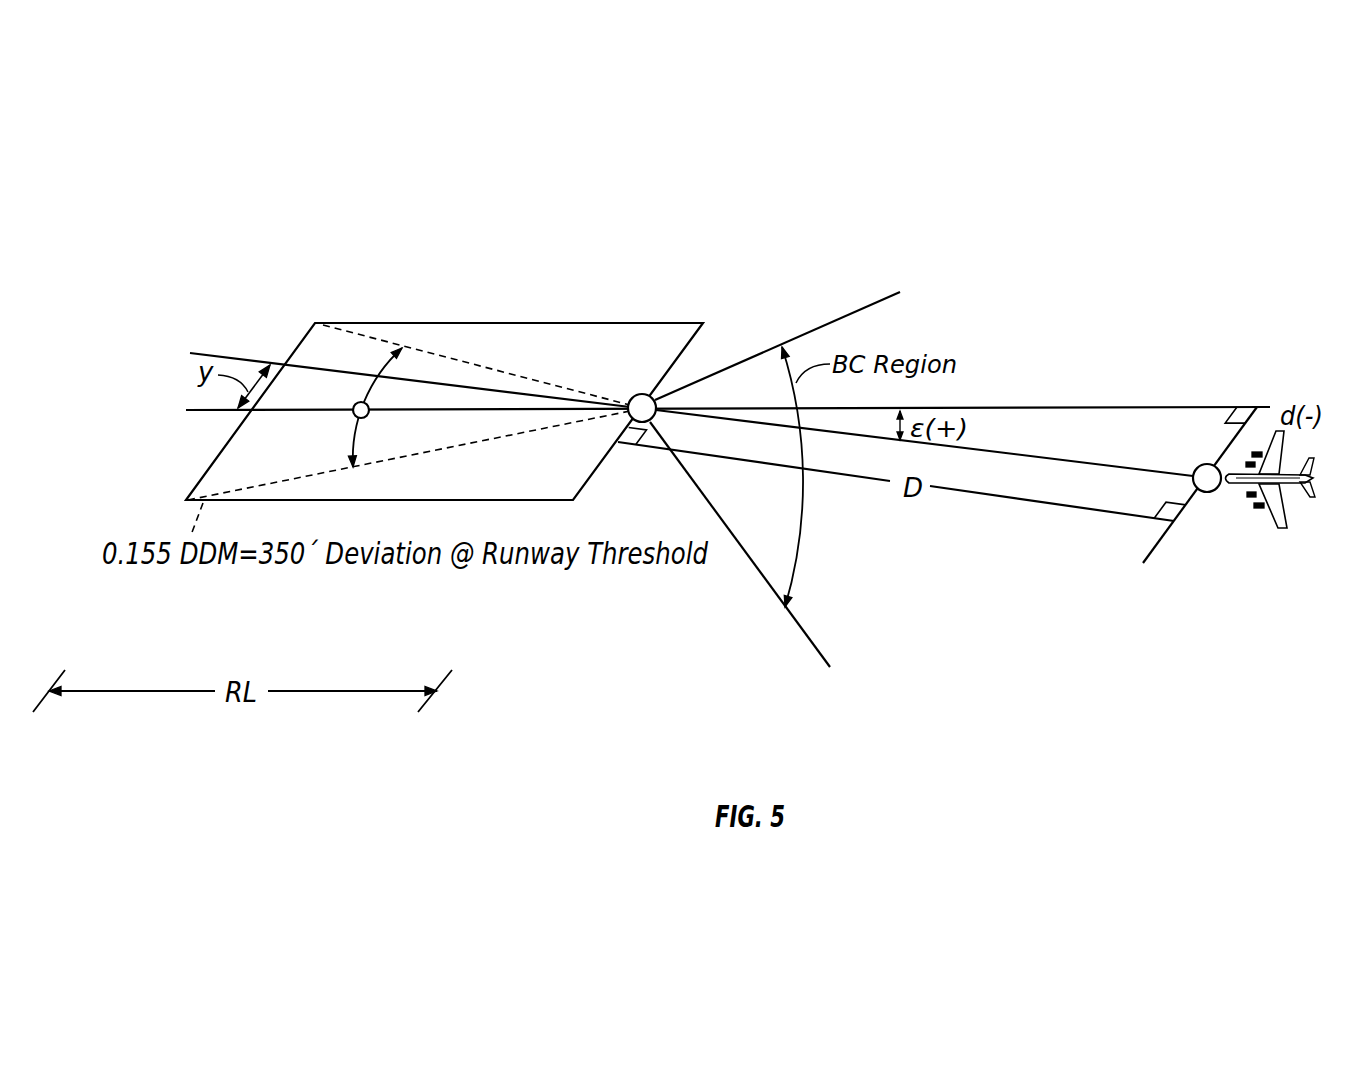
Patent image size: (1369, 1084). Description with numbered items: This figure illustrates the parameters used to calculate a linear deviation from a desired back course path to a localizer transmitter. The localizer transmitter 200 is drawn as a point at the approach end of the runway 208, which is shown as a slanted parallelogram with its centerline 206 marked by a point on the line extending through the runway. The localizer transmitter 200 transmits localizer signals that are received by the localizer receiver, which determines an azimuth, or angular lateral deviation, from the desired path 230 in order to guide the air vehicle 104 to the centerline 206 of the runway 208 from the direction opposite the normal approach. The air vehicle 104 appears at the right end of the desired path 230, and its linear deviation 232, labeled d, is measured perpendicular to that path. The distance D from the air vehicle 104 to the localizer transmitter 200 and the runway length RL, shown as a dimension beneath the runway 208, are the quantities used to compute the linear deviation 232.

The localizer transmitter 200 is at (643, 394).
The centerline 206 is at (342, 412).
The runway 208 is at (537, 501).
The desired path 230 is at (1058, 407).
The linear deviation 232 is at (1227, 447).
The air vehicle 104 is at (1286, 490).